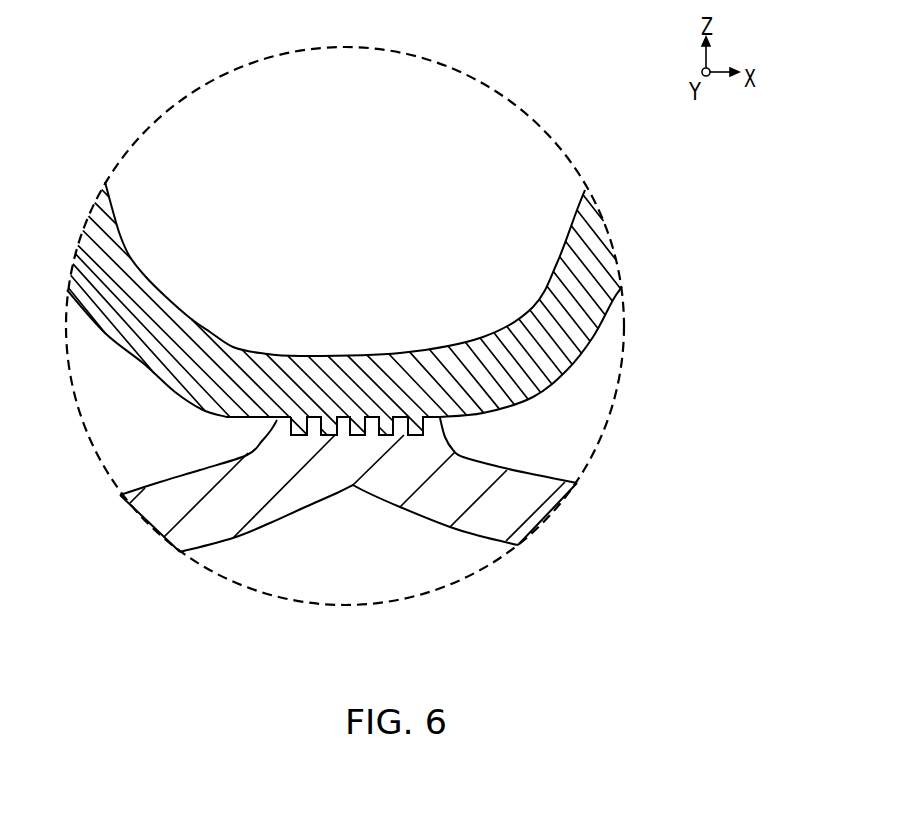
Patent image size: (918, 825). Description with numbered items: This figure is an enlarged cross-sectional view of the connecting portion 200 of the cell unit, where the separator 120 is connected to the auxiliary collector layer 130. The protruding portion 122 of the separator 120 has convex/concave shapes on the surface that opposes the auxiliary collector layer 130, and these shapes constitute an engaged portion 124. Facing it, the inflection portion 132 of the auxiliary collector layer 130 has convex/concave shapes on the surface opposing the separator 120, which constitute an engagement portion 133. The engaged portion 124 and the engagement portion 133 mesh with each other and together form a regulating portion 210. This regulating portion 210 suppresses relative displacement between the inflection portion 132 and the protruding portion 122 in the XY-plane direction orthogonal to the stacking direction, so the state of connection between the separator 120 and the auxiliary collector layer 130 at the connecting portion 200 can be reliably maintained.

The connecting portion 200 is at (497, 92).
The separator 120 is at (603, 288).
The protruding portion 122 is at (253, 352).
The regulating portion 210 is at (447, 292).
The engaged portion 124 is at (329, 420).
The engagement portion 133 is at (400, 423).
The auxiliary collector layer 130 is at (550, 500).
The inflection portion 132 is at (378, 477).